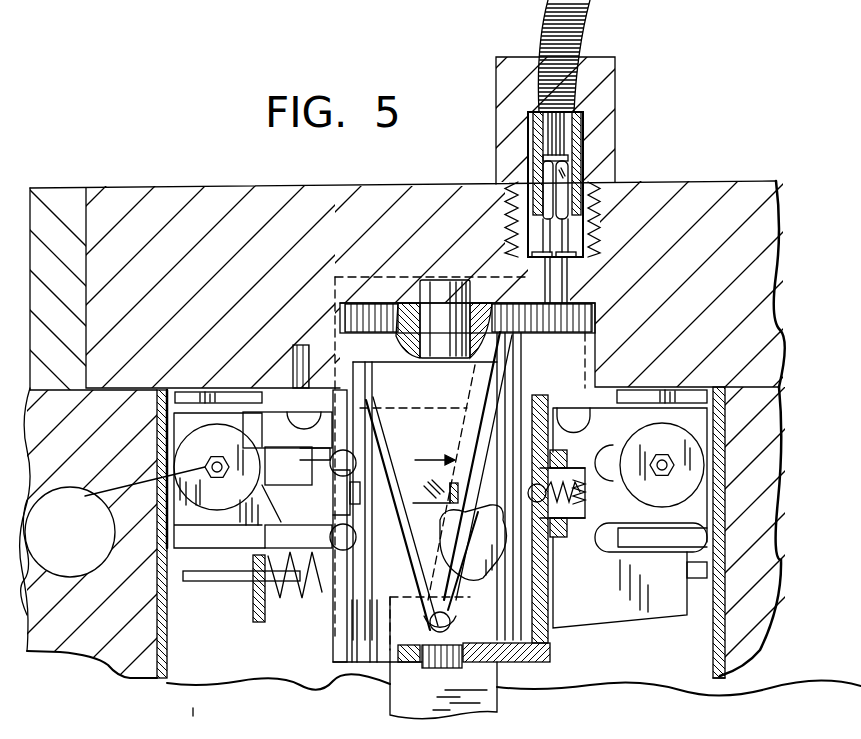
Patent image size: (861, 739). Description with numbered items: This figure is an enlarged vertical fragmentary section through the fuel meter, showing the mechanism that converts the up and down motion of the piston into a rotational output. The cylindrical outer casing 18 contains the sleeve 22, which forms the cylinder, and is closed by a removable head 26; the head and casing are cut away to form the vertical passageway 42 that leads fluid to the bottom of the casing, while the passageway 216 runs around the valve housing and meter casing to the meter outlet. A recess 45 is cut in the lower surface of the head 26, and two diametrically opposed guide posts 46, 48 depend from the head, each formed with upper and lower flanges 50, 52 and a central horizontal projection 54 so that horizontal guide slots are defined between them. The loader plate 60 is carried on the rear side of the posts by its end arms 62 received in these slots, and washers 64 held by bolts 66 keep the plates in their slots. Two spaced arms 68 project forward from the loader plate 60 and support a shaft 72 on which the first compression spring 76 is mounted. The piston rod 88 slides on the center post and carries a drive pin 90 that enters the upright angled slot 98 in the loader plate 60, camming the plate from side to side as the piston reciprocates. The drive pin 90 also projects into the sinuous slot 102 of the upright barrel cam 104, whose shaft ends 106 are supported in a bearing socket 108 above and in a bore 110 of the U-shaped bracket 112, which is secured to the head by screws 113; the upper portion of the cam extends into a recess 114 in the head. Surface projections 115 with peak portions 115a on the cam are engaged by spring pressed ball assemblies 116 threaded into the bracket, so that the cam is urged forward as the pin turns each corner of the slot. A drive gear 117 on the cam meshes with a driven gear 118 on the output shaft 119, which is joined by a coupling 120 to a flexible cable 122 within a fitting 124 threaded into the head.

The outer casing 18 is at (752, 620).
The sleeve 22 is at (721, 680).
The head 26 is at (755, 272).
The vertical passageway 42 is at (345, 277).
The recess 45 is at (192, 721).
The guide post 46 is at (183, 513).
The guide post 48 is at (712, 500).
The upper flange 50 is at (200, 395).
The lower flange 52 is at (218, 548).
The central horizontal projection 54 is at (612, 494).
The loader plate 60 is at (592, 612).
The end arms 62 is at (272, 490).
The washers 64 is at (228, 448).
The bolts 66 is at (782, 464).
The arms 68 is at (261, 622).
The shaft 72 is at (236, 582).
The first compression spring 76 is at (300, 592).
The piston rod 88 is at (483, 706).
The drive pin 90 is at (445, 668).
The angled slot 98 is at (462, 540).
The sinuous slot 102 is at (503, 463).
The barrel cam 104 is at (409, 404).
The shaft ends 106 is at (435, 292).
The bearing socket 108 is at (450, 282).
The bore 110 is at (407, 667).
The U-shaped bracket 112 is at (540, 662).
The screws 113 is at (283, 413).
The recess 114 is at (340, 305).
The surface projections 115 is at (527, 488).
The peak portions 115a is at (429, 503).
The spring pressed ball assemblies 116 is at (573, 542).
The drive gear 117 is at (384, 303).
The driven gear 118 is at (570, 298).
The output shaft 119 is at (566, 236).
The coupling 120 is at (568, 157).
The flexible cable 122 is at (556, 136).
The fitting 124 is at (606, 88).
The passageway 216 is at (107, 568).